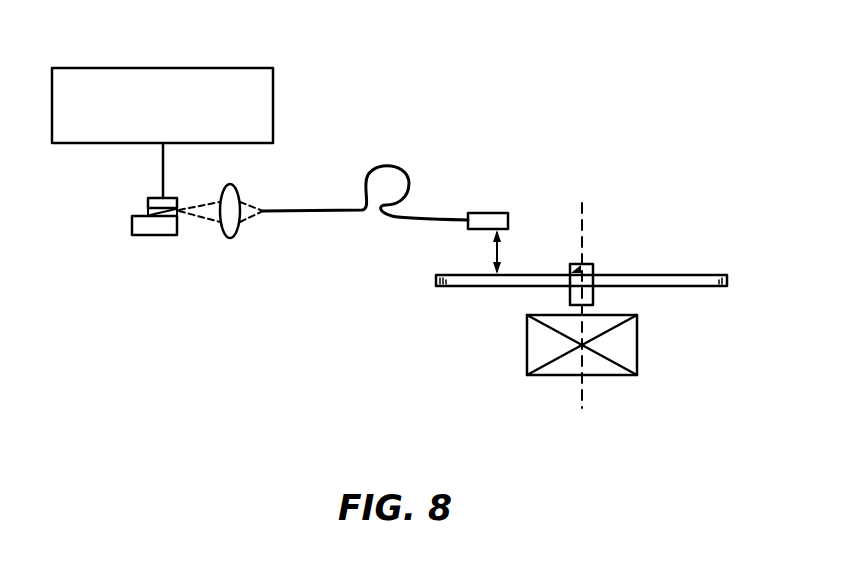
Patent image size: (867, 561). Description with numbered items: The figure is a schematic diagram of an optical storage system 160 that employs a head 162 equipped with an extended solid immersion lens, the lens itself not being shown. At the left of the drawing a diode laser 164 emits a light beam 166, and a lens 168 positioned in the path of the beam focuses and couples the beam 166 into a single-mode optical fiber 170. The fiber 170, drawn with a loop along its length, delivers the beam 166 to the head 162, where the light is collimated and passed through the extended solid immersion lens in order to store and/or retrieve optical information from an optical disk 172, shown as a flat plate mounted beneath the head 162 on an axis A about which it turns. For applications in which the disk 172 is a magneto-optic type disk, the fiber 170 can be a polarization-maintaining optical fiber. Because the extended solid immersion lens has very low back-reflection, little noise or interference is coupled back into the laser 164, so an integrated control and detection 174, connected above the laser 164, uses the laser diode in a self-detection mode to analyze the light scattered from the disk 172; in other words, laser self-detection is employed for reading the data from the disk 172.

The optical storage system 160 is at (624, 85).
The head 162 is at (493, 212).
The diode laser 164 is at (148, 205).
The light beam 166 is at (212, 218).
The lens 168 is at (240, 235).
The single-mode optical fiber 170 is at (370, 165).
The optical disk 172 is at (687, 272).
The integrated control and detection 174 is at (273, 95).
The axis of rotation A is at (583, 228).